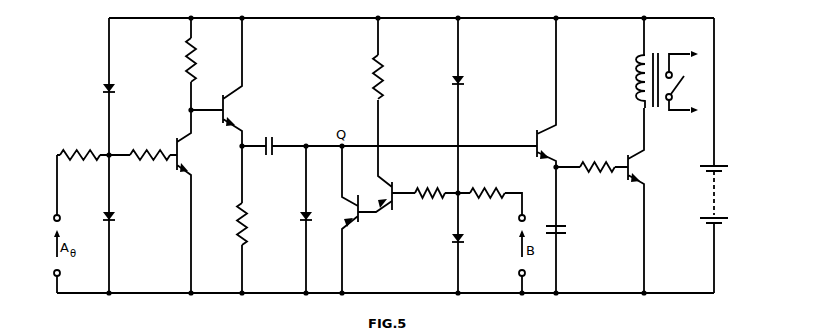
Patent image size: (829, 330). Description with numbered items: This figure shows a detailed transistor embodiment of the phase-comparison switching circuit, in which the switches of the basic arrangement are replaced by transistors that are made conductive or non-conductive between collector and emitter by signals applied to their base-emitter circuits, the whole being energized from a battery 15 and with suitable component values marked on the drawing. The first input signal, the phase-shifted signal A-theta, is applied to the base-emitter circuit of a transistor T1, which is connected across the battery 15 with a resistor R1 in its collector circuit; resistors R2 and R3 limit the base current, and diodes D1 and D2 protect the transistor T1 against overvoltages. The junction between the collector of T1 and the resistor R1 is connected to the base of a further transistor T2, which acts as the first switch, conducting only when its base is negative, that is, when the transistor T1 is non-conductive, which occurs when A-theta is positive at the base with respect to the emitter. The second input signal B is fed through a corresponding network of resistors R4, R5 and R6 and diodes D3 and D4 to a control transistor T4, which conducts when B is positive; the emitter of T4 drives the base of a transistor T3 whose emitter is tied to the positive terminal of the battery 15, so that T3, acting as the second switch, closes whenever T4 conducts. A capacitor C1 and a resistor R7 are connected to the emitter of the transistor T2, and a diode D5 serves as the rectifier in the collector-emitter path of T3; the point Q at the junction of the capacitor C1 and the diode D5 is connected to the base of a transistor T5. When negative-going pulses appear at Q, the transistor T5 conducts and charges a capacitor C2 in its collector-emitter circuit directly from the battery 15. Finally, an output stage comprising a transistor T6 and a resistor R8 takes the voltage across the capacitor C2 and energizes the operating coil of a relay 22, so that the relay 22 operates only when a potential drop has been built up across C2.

The battery 15 is at (701, 203).
The relay 22 is at (654, 65).
The resistor R1 is at (182, 60).
The resistor R2 is at (80, 154).
The resistor R3 is at (149, 154).
The resistor R4 is at (372, 77).
The resistor R5 is at (428, 192).
The resistor R6 is at (486, 192).
The resistor R7 is at (222, 223).
The resistor R8 is at (590, 156).
The transistor T1 is at (194, 201).
The transistor T2 is at (240, 82).
The transistor T3 is at (367, 219).
The control transistor T4 is at (397, 178).
The transistor T5 is at (523, 155).
The transistor T6 is at (649, 200).
The protective diode D1 is at (92, 85).
The protective diode D2 is at (128, 231).
The protective diode D3 is at (469, 83).
The protective diode D4 is at (440, 251).
The diode D5 is at (298, 219).
The capacitor C1 is at (271, 151).
The capacitor C2 is at (566, 233).